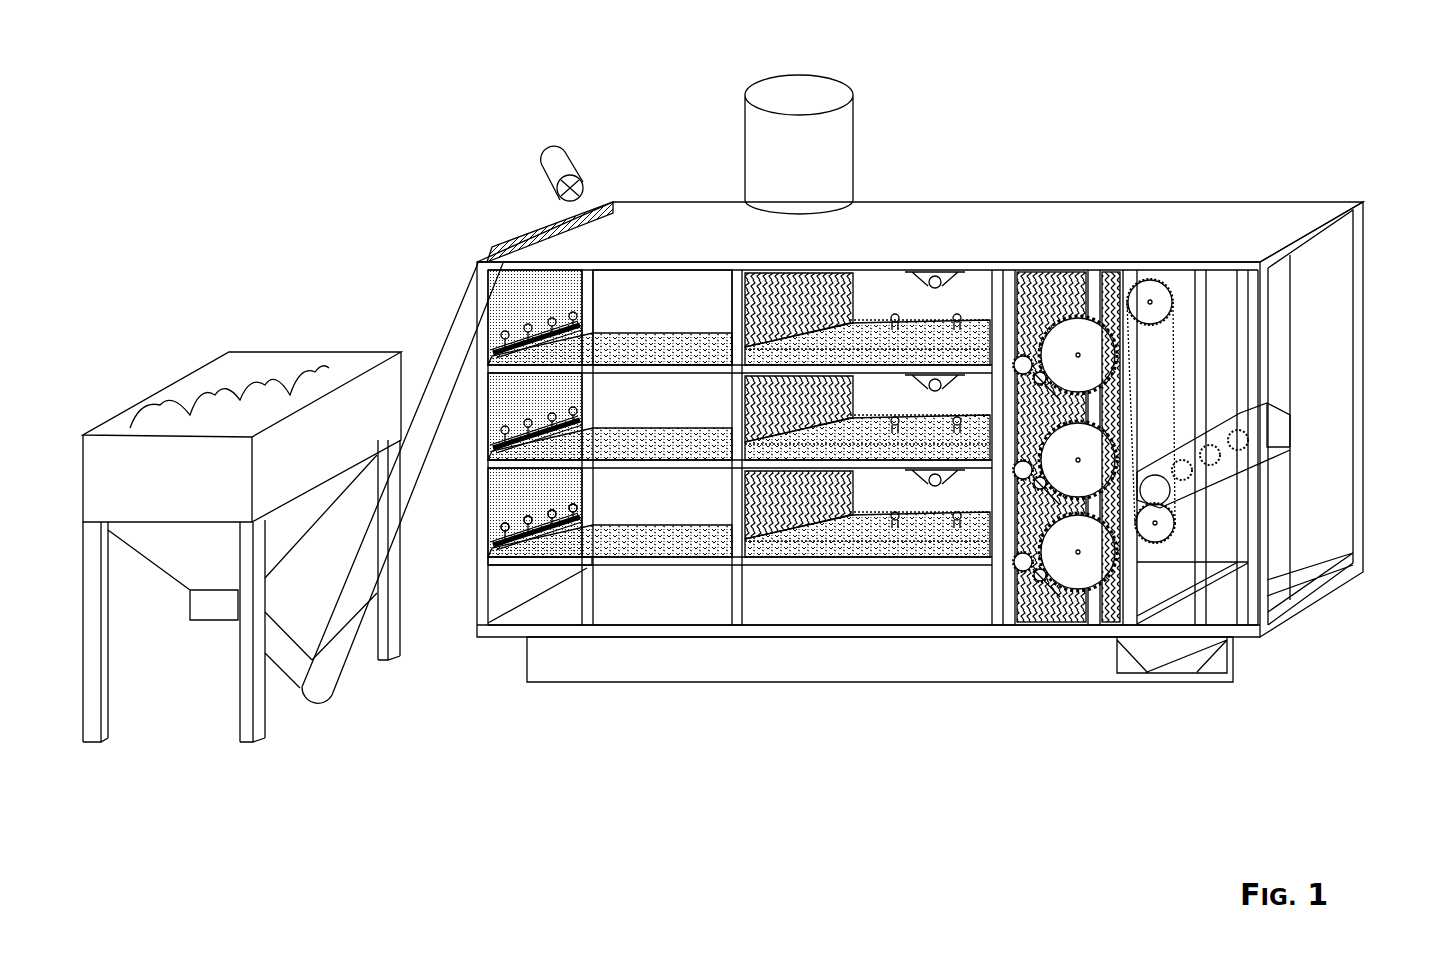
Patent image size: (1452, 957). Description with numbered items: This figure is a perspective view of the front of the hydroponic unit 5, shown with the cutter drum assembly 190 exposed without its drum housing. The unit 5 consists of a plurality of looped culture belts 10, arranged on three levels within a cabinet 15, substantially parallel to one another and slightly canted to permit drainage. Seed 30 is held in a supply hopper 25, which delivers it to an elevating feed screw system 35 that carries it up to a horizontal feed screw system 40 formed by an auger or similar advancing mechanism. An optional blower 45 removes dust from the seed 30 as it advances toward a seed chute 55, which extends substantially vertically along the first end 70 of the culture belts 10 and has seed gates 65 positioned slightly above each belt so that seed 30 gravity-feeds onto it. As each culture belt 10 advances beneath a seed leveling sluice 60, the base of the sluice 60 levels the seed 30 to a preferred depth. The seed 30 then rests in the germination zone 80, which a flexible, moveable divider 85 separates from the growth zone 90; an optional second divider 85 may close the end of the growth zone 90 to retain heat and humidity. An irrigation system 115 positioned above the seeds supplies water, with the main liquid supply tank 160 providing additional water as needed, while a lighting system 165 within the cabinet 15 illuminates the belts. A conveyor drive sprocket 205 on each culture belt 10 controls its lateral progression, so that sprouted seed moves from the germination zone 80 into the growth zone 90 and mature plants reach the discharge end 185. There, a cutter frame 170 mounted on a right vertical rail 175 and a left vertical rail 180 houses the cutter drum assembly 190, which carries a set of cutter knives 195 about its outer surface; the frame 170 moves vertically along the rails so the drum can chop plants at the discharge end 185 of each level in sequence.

The hydroponic unit 5 is at (1308, 190).
The culture belt 10 is at (612, 558).
The cabinet 15 is at (515, 630).
The supply hopper 25 is at (265, 350).
The seed 30 is at (505, 338).
The elevating feed screw system 35 is at (340, 645).
The horizontal feed screw system 40 is at (557, 218).
The blower 45 is at (542, 168).
The seed chute 55 is at (527, 282).
The seed leveling sluice 60 is at (507, 550).
The seed gate 65 is at (507, 530).
The first end 70 is at (513, 555).
The germination zone 80 is at (707, 293).
The divider 85 is at (832, 282).
The growth zone 90 is at (852, 548).
The irrigation system 115 is at (525, 323).
The main liquid supply tank 160 is at (745, 85).
The lighting system 165 is at (913, 285).
The cutter frame 170 is at (1278, 447).
The right vertical rail 175 is at (1138, 278).
The left vertical rail 180 is at (1237, 345).
The discharge end 185 is at (1044, 578).
The cutter drum assembly 190 is at (1243, 447).
The cutter knives 195 is at (1205, 458).
The conveyor drive sprocket 205 is at (1083, 277).